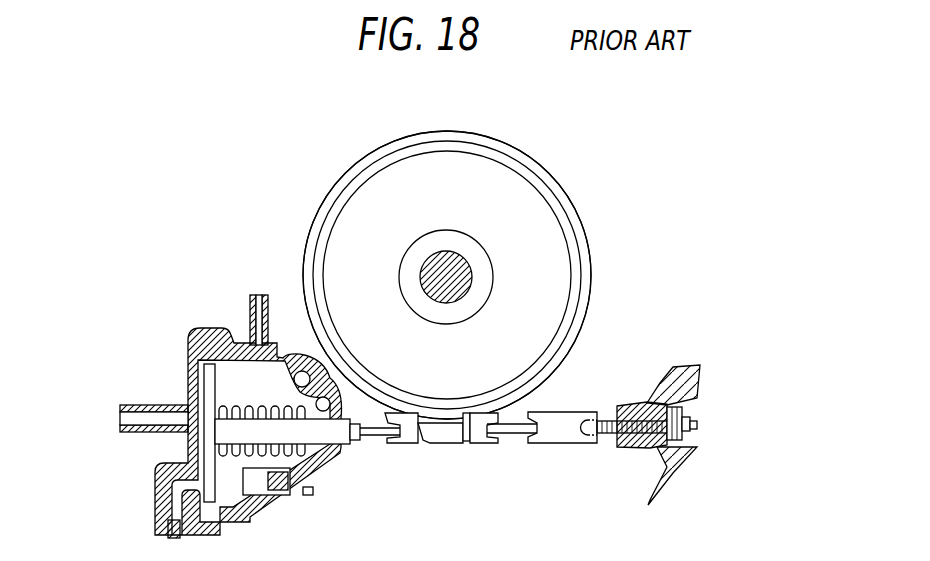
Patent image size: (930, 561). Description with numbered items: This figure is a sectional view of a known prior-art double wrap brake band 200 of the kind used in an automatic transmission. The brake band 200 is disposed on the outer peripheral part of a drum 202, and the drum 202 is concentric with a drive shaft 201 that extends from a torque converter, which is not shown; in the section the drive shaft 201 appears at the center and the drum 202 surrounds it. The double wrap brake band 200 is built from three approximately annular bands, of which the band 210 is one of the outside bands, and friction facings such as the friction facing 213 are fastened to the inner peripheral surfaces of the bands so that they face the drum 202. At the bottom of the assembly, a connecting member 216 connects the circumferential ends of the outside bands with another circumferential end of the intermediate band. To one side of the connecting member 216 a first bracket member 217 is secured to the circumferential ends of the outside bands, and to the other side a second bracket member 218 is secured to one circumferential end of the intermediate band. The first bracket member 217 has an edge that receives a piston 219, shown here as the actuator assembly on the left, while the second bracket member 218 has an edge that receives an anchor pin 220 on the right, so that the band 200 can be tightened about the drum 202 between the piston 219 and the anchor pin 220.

The double wrap brake band 200 is at (338, 175).
The drive shaft 201 is at (443, 276).
The drum 202 is at (532, 208).
The band 210 is at (593, 286).
The friction facing 213 is at (570, 248).
The connecting member 216 is at (450, 445).
The first bracket member 217 is at (400, 445).
The second bracket member 218 is at (493, 447).
The piston 219 is at (340, 447).
The anchor pin 220 is at (578, 412).